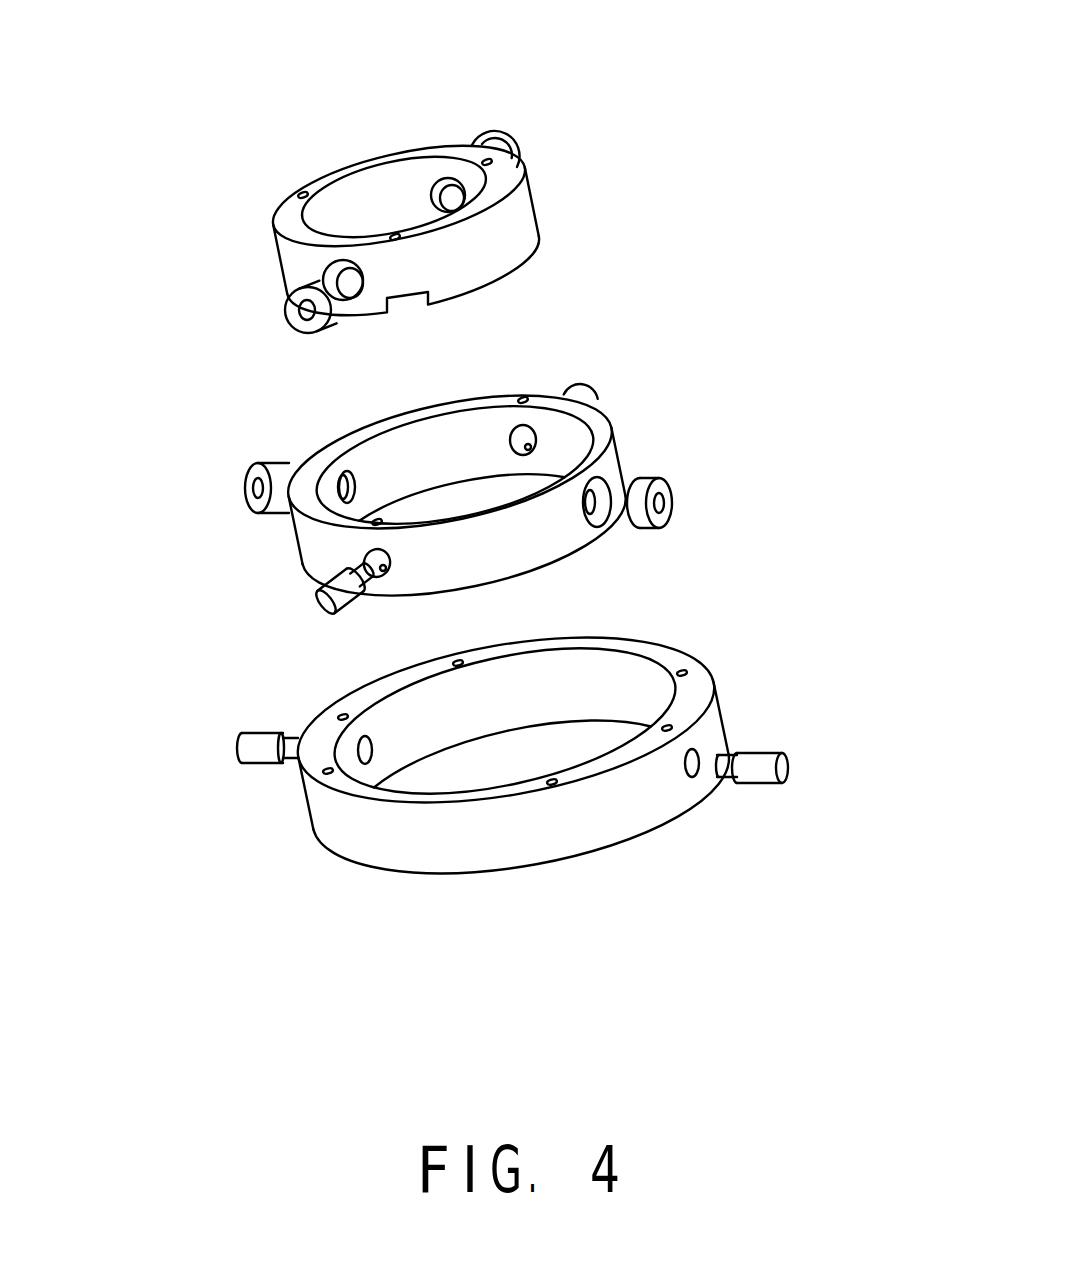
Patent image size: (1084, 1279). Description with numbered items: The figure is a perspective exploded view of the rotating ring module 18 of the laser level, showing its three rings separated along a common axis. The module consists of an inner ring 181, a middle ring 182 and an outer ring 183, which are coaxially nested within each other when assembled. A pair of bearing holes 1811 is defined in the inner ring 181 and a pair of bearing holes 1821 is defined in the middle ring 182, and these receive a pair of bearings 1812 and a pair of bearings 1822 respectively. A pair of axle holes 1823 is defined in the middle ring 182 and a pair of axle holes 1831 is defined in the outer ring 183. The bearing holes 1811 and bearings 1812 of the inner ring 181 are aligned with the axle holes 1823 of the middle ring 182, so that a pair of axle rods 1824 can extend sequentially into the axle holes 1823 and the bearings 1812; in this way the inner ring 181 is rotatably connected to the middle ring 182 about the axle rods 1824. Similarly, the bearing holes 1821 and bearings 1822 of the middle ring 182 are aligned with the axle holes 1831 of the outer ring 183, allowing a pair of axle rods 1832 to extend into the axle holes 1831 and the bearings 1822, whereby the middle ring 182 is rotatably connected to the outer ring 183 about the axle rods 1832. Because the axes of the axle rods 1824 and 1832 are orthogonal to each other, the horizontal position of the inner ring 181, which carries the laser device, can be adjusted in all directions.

The rotating ring module 18 is at (385, 60).
The inner ring 181 is at (500, 252).
The bearing holes 1811 is at (325, 272).
The bearings 1812 is at (300, 323).
The middle ring 182 is at (598, 426).
The bearing holes 1821 is at (606, 492).
The bearings 1822 is at (658, 518).
The axle holes 1823 is at (364, 557).
The axle rods 1824 is at (322, 590).
The outer ring 183 is at (667, 653).
The axle holes 1831 is at (697, 770).
The axle rods 1832 is at (757, 757).